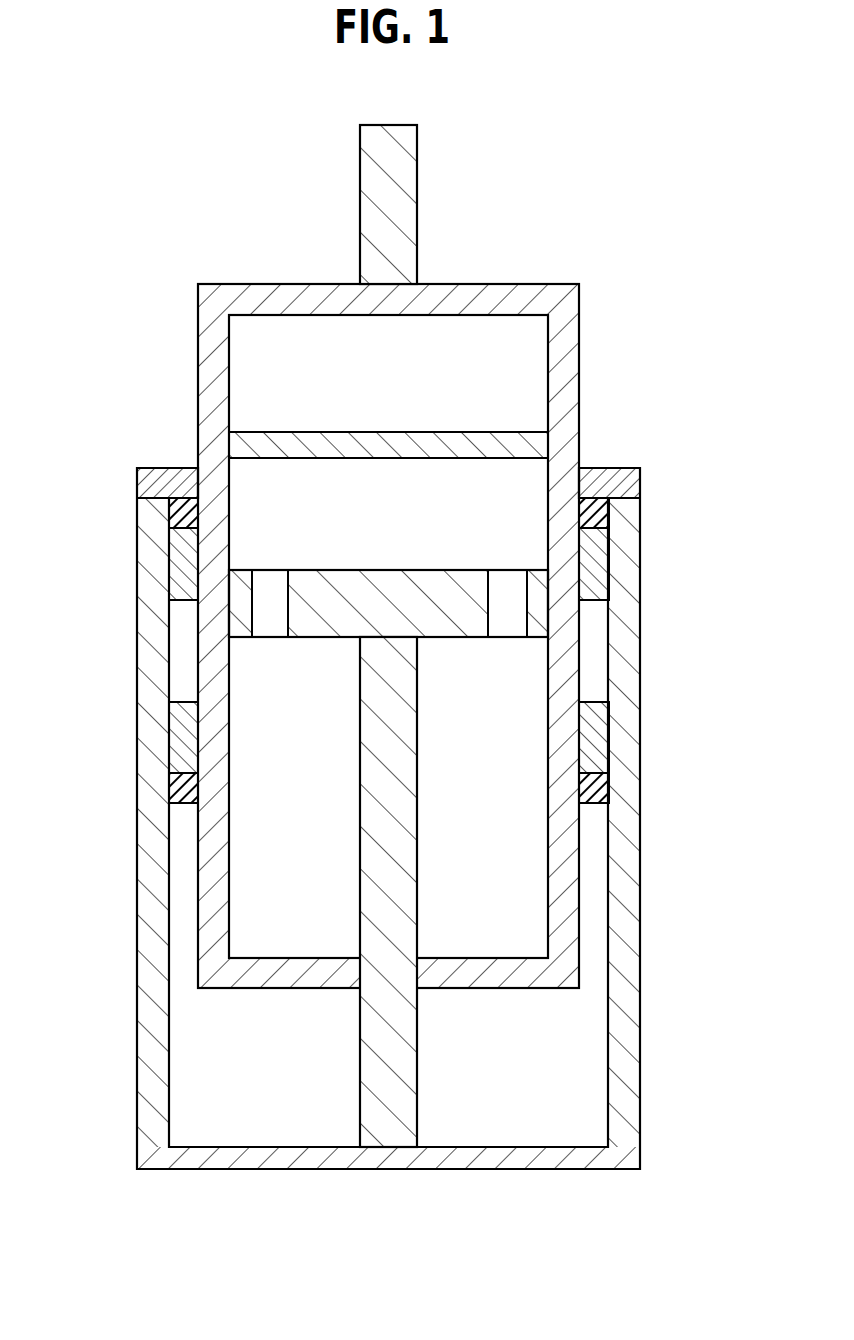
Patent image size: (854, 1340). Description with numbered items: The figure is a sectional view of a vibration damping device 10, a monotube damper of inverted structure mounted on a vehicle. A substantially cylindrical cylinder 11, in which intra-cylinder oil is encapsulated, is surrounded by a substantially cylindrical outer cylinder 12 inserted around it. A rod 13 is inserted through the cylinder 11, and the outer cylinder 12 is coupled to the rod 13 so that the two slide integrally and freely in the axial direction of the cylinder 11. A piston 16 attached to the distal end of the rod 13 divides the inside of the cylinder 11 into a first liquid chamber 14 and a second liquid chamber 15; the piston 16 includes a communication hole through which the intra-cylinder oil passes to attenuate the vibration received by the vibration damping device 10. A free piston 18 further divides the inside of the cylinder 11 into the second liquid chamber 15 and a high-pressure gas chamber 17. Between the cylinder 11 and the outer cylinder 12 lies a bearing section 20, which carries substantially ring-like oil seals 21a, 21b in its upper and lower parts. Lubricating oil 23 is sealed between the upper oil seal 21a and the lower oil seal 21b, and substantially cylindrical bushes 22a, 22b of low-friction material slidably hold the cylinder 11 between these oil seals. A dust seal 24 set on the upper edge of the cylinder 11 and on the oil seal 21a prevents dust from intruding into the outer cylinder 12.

The vibration damping device 10 is at (567, 191).
The cylinder 11 is at (591, 365).
The outer cylinder 12 is at (626, 1046).
The rod 13 is at (400, 1098).
The first liquid chamber 14 is at (277, 812).
The second liquid chamber 15 is at (371, 533).
The piston 16 is at (535, 598).
The high-pressure gas chamber 17 is at (371, 390).
The free piston 18 is at (503, 443).
The bearing section 20 is at (137, 498).
The oil seal 21a is at (594, 500).
The oil seal 21b is at (593, 795).
The bush 22a is at (592, 548).
The bush 22b is at (593, 740).
The lubricating oil 23 is at (592, 648).
The dust seal 24 is at (155, 482).